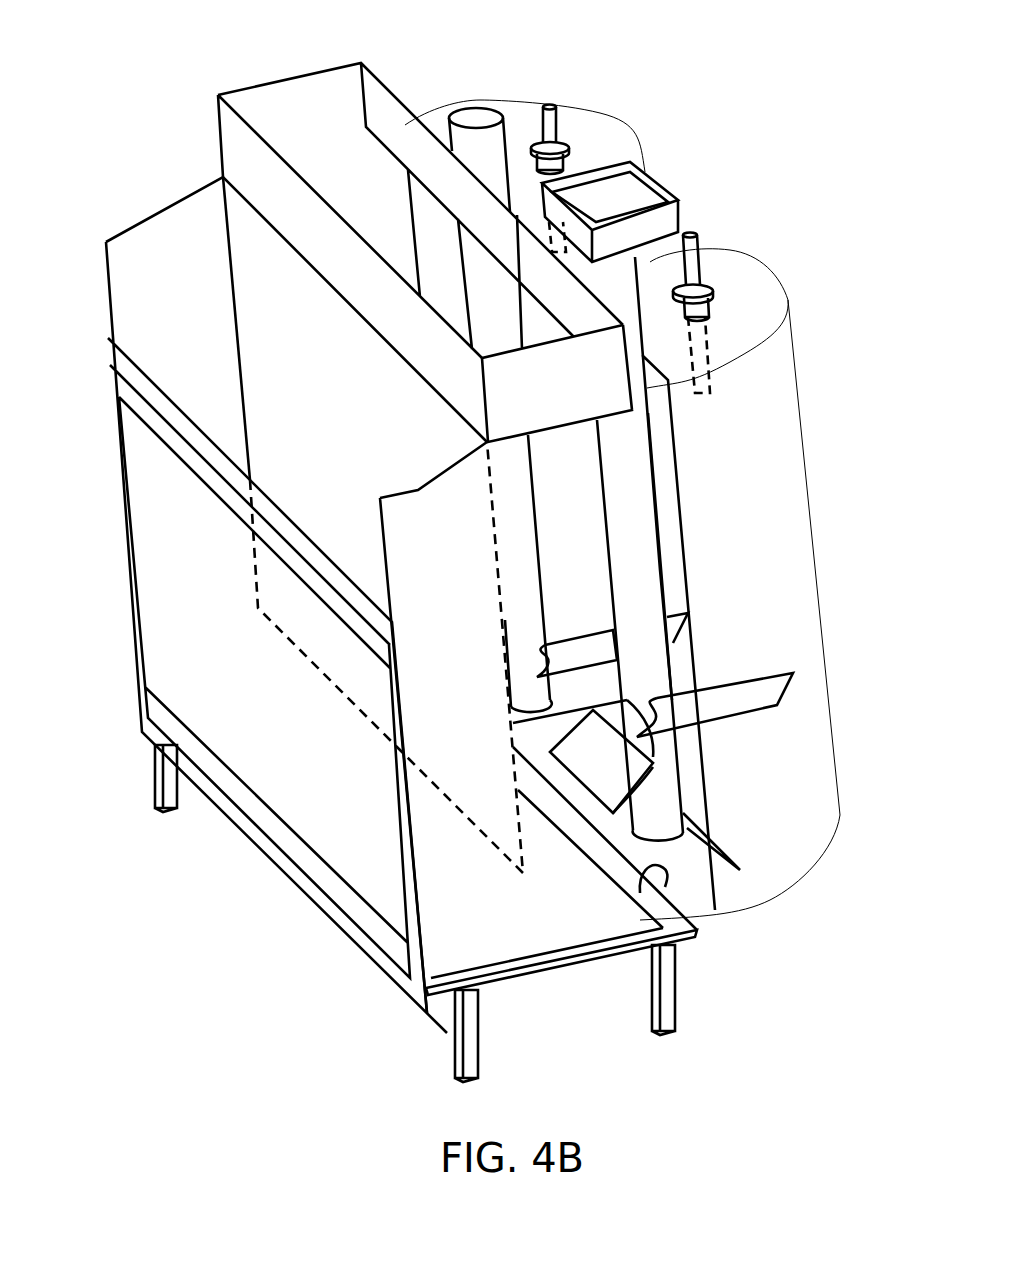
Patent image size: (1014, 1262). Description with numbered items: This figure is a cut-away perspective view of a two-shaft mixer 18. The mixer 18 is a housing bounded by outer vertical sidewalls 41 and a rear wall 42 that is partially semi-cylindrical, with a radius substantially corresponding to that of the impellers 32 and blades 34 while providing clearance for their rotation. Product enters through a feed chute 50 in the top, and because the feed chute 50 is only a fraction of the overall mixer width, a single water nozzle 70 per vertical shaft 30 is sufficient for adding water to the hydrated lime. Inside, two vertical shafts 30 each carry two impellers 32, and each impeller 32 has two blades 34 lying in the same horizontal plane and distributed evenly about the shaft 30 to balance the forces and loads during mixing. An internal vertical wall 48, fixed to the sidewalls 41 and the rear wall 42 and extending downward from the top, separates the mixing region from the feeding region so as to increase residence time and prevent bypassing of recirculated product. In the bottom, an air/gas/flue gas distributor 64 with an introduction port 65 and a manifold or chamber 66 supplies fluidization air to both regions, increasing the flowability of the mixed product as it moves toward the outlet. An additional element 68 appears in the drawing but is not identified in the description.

The mixer 18 is at (643, 83).
The vertical shaft 30 is at (538, 518).
The impeller 32 is at (612, 711).
The blades 34 is at (620, 772).
The outer vertical sidewall 41 is at (118, 522).
The rear wall 42 is at (808, 570).
The internal vertical wall 48 is at (277, 323).
The feed chute 50 is at (332, 172).
The air/gas/flue gas distributor 64 is at (220, 907).
The introduction port 65 is at (665, 888).
The manifold or chamber 66 is at (347, 793).
The base plate 68 is at (567, 937).
The water nozzle 70 is at (710, 380).